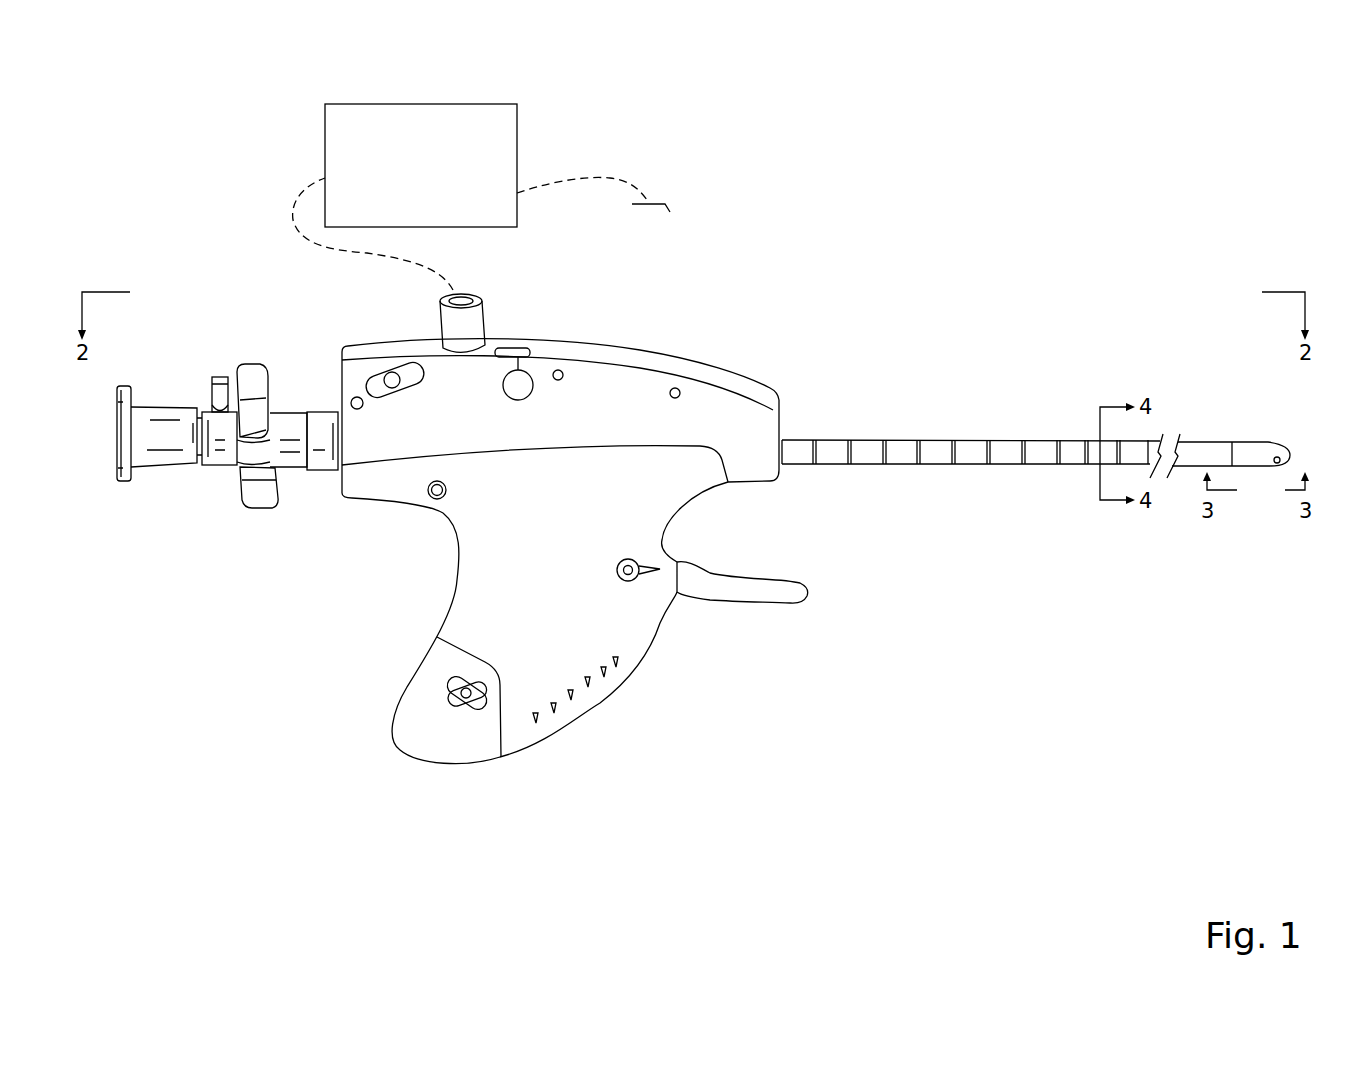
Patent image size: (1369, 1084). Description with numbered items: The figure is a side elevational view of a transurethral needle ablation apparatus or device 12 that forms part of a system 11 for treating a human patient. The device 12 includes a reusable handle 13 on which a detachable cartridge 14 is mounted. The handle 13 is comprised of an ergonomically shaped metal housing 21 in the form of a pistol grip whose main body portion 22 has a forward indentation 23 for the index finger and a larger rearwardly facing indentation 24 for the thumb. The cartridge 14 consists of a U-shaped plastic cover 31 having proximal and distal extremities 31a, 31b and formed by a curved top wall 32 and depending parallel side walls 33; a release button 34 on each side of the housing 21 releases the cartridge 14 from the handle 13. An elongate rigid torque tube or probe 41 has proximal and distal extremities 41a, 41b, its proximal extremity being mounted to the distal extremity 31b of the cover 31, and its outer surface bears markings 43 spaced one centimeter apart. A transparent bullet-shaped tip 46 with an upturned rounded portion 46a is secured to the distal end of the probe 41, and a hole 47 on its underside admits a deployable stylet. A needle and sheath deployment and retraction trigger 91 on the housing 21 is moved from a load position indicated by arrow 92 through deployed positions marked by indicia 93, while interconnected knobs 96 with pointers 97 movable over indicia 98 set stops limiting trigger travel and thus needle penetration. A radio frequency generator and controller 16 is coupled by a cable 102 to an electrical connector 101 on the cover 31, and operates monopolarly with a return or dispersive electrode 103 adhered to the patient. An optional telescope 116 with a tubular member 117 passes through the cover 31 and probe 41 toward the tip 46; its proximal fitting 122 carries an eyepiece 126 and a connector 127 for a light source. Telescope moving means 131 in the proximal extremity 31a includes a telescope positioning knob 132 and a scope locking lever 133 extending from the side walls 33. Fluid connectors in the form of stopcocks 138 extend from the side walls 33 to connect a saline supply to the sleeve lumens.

The system 11 is at (1013, 137).
The transurethral needle ablation apparatus 12 is at (813, 238).
The reusable handle 13 is at (663, 680).
The detachable cartridge 14 is at (728, 330).
The radio frequency generator and controller 16 is at (504, 219).
The housing 21 is at (533, 748).
The main body portion 22 is at (472, 572).
The forward indentation 23 is at (667, 517).
The rearwardly facing indentation 24 is at (457, 540).
The cover 31 is at (660, 355).
The proximal extremity of cover 31a is at (440, 366).
The distal extremity of cover 31b is at (767, 418).
The curved top wall 32 is at (630, 357).
The side walls 33 is at (653, 437).
The release button 34 is at (447, 490).
The probe 41 is at (1056, 450).
The proximal extremity of probe 41a is at (797, 455).
The distal extremity of probe 41b is at (1190, 462).
The markings 43 is at (953, 440).
The bullet-shaped tip 46 is at (1248, 437).
The upturned rounded portion 46a is at (1288, 440).
The first hole 47 is at (1280, 460).
The needle and sheath deployment and retraction trigger 91 is at (767, 603).
The load position arrow 92 is at (637, 580).
The indicia 93 is at (570, 710).
The knobs 96 is at (440, 697).
The pointers 97 is at (436, 666).
The indicia 98 is at (433, 762).
The electrical connector 101 is at (487, 310).
The cable 102 is at (297, 200).
The return or dispersive electrode 103 is at (670, 212).
The telescope 116 is at (155, 490).
The tubular member 117 is at (245, 490).
The fitting 122 is at (205, 470).
The eyepiece 126 is at (122, 383).
The connector 127 is at (213, 376).
The telescope moving means 131 is at (313, 487).
The telescope positioning knob 132 is at (375, 370).
The scope locking lever 133 is at (248, 363).
The fluid connectors 138 is at (523, 400).